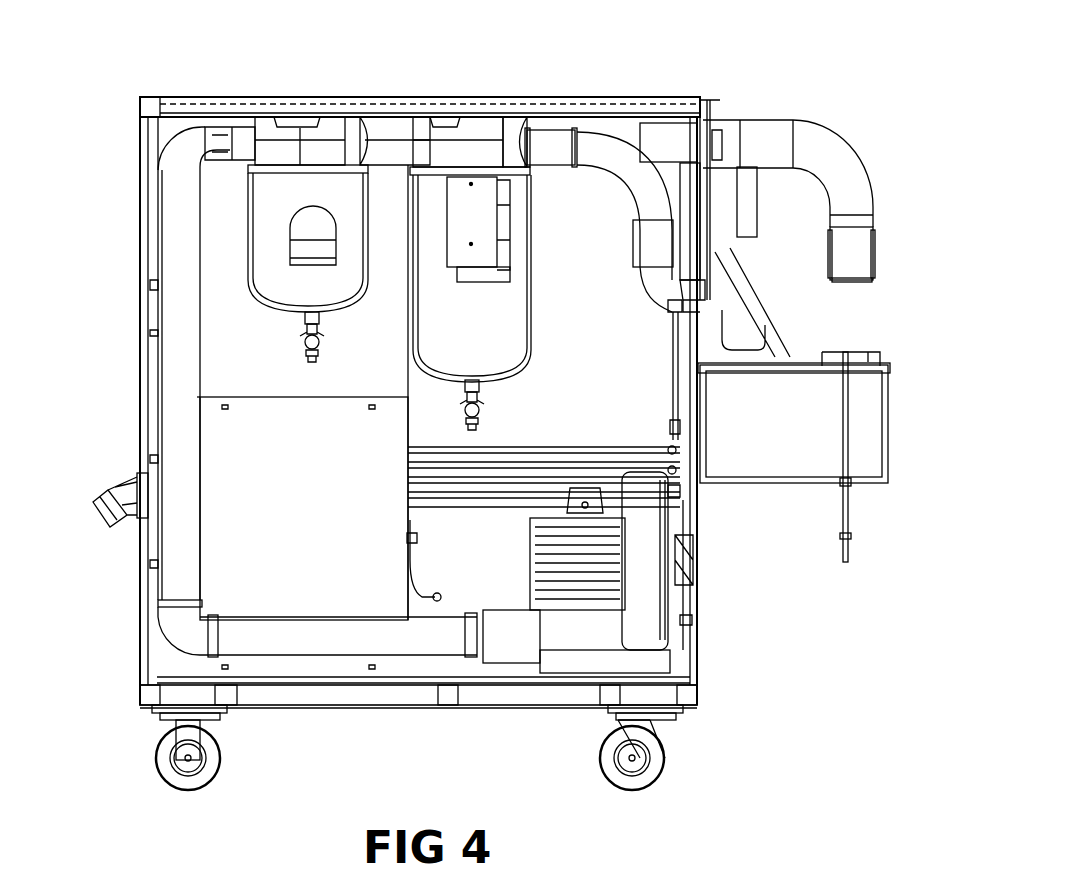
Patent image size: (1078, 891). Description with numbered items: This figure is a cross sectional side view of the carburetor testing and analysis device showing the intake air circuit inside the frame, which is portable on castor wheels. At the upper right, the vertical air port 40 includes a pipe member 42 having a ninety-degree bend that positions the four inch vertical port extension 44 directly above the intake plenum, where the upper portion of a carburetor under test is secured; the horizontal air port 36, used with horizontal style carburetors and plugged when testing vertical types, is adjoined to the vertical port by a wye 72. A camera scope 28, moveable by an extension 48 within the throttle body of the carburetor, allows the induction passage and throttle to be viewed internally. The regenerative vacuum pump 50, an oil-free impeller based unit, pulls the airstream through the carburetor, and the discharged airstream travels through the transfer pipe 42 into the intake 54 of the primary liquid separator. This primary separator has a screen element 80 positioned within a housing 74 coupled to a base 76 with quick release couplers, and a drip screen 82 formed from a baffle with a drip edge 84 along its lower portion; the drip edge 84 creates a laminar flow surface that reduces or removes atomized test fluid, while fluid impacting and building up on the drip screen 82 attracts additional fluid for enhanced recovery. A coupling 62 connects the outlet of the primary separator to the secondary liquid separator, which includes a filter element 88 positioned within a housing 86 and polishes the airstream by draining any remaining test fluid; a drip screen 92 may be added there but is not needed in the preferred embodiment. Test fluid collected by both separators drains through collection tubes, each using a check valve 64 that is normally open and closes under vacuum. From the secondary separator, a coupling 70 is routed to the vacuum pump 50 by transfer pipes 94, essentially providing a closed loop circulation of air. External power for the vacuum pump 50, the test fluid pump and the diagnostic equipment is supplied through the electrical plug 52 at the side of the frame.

The camera scope 28 is at (847, 358).
The horizontal air port 36 is at (713, 268).
The vertical air port 40 is at (723, 100).
The pipe member 42 is at (853, 142).
The vertical port extension 44 is at (873, 263).
The extension 48 is at (852, 524).
The regenerative vacuum pump 50 is at (650, 580).
The electrical plug 52 is at (100, 500).
The intake 54 is at (565, 120).
The coupling 62 is at (320, 177).
The check valve 64 is at (310, 348).
The coupling 70 is at (228, 122).
The wye 72 is at (622, 120).
The housing 74 is at (525, 326).
The base 76 is at (487, 122).
The screen element 80 is at (497, 198).
The drip screen 82 is at (510, 225).
The drip edge 84 is at (510, 280).
The housing 86 is at (270, 308).
The filter element 88 is at (282, 222).
The drip screen 92 is at (290, 262).
The transfer pipes 94 is at (200, 530).